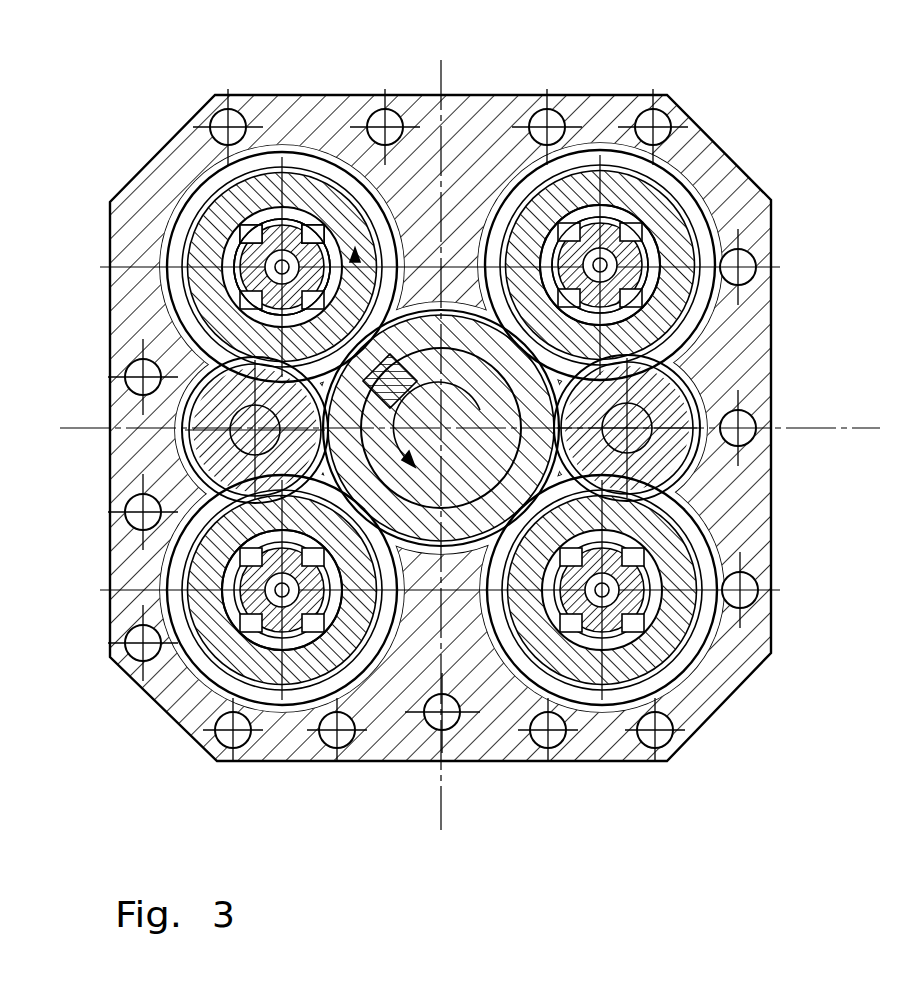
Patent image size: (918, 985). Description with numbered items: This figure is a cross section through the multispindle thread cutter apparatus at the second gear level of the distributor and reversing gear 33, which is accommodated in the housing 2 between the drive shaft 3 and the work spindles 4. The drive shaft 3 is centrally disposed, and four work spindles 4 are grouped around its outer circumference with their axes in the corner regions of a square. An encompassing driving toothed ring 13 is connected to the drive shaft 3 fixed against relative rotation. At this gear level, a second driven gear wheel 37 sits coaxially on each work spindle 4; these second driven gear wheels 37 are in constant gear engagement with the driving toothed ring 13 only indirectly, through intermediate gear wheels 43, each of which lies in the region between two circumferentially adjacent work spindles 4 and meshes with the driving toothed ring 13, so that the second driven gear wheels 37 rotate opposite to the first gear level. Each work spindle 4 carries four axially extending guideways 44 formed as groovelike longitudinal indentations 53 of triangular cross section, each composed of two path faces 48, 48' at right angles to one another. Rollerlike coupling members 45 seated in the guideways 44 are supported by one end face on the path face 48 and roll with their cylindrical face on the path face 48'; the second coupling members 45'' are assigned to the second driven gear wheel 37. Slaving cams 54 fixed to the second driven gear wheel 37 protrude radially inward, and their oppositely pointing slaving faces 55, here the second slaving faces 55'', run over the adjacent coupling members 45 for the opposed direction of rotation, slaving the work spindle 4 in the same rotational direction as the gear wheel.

The housing 2 is at (693, 733).
The drive shaft 3 is at (462, 480).
The work spindle 4 is at (245, 268).
The driving toothed ring 13 is at (476, 305).
The distributor and reversing gear 33 is at (395, 700).
The second driven gear wheel 37 is at (683, 190).
The intermediate gear wheel 43 is at (195, 435).
The guideway 44 is at (318, 605).
The coupling member 45 is at (221, 161).
The second coupling member 45'' is at (282, 267).
The path face 48 is at (746, 513).
The path face 48' is at (532, 724).
The longitudinal indentation 53 is at (640, 215).
The slaving cam 54 is at (580, 230).
The slaving face 55 is at (284, 125).
The second slaving face 55'' is at (372, 125).